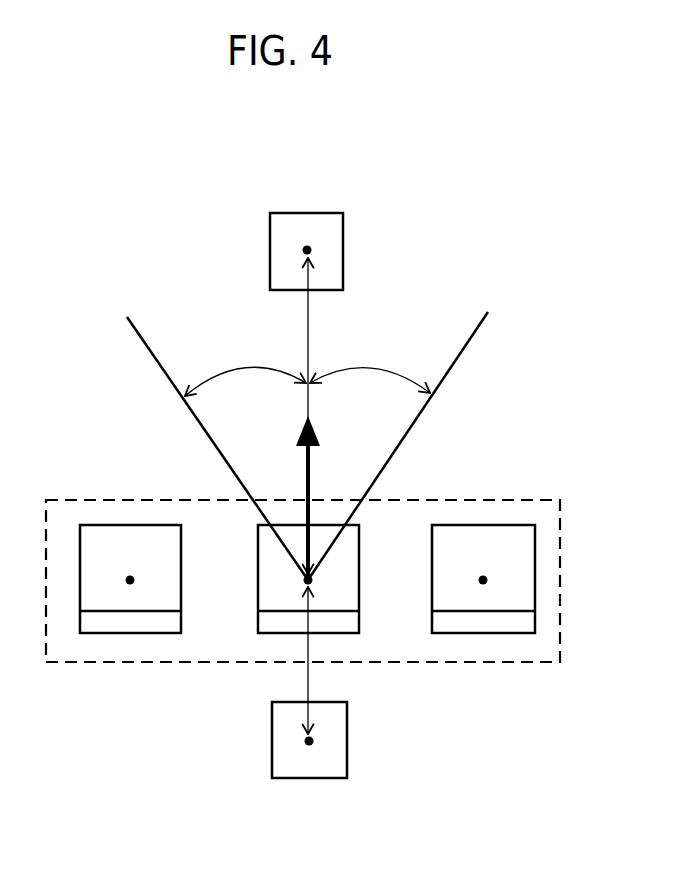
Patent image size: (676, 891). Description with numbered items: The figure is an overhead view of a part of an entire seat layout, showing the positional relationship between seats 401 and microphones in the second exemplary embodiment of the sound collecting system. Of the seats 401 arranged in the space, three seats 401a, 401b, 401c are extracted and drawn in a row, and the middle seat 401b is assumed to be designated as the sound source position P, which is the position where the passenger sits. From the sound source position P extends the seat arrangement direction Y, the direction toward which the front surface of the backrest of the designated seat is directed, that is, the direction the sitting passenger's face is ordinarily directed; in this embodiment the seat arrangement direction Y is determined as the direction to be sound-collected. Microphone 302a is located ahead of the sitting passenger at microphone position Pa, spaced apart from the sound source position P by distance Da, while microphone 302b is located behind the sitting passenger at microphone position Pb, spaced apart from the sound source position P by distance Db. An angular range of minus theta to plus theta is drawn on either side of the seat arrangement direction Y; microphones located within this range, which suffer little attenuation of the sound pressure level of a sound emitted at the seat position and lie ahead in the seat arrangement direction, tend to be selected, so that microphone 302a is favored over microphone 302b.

The microphone 302a is at (343, 232).
The microphone 302b is at (348, 730).
The seats 401 is at (533, 500).
The seat 401a is at (92, 525).
The seat 401b is at (258, 585).
The seat 401c is at (450, 525).
The sound source position P is at (306, 583).
The microphone position Pa is at (304, 246).
The microphone position Pb is at (306, 746).
The distance Da is at (327, 416).
The distance Db is at (328, 660).
The seat arrangement direction Y is at (315, 496).